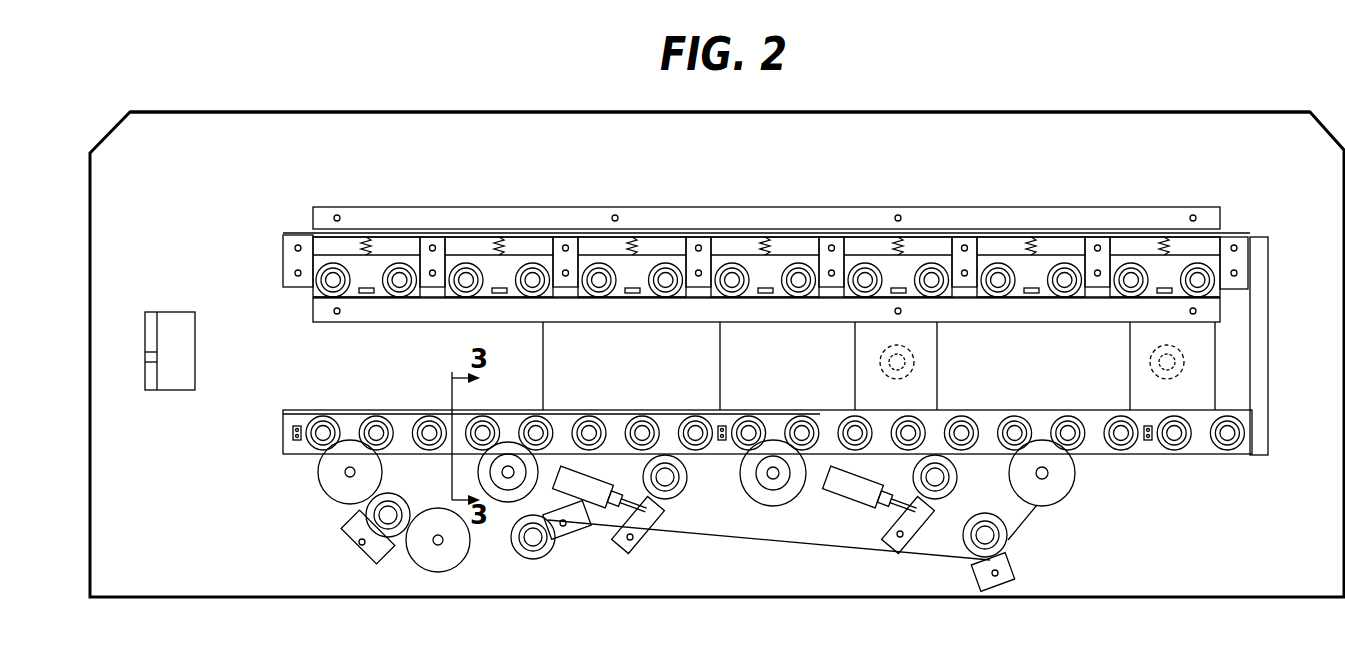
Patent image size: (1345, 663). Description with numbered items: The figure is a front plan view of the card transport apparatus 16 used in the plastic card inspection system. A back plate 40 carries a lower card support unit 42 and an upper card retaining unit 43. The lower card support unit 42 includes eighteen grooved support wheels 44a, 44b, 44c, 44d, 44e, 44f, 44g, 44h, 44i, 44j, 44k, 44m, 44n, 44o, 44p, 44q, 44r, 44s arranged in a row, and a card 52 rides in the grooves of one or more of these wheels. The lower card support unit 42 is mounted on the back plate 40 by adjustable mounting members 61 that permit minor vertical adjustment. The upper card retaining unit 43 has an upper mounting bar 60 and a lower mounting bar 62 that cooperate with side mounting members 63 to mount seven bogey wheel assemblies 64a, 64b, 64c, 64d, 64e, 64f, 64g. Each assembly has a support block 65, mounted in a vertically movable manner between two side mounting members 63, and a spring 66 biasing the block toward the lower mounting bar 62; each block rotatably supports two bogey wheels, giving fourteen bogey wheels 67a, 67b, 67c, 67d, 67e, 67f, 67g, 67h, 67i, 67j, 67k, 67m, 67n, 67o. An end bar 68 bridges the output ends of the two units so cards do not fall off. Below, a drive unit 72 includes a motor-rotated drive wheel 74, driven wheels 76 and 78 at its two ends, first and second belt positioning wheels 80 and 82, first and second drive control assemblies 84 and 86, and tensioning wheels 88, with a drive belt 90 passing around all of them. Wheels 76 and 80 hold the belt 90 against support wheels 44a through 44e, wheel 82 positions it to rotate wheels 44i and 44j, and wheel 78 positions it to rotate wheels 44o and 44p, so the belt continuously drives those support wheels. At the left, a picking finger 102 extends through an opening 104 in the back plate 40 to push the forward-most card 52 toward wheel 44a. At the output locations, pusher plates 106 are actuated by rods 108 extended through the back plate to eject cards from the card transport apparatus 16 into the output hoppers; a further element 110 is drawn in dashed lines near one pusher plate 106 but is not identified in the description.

The card transport apparatus 16 is at (980, 90).
The back plate 40 is at (432, 130).
The lower card support unit 42 is at (273, 434).
The upper card retaining unit 43 is at (744, 158).
The support wheel 44a is at (324, 415).
The support wheel 44b is at (377, 415).
The support wheel 44c is at (432, 415).
The support wheel 44d is at (484, 415).
The support wheel 44e is at (537, 415).
The support wheel 44f is at (592, 415).
The support wheel 44g is at (644, 415).
The support wheel 44h is at (700, 415).
The support wheel 44i is at (754, 415).
The support wheel 44j is at (804, 415).
The support wheel 44k is at (856, 415).
The support wheel 44m is at (908, 415).
The support wheel 44n is at (961, 415).
The support wheel 44o is at (1014, 415).
The support wheel 44p is at (1074, 453).
The support wheel 44q is at (1125, 415).
The support wheel 44r is at (1180, 453).
The support wheel 44s is at (1230, 453).
The card 52 is at (623, 369).
The upper mounting bar 60 is at (318, 213).
The adjustable mounting member 61 is at (285, 452).
The lower mounting bar 62 is at (318, 313).
The side mounting member 63 is at (290, 241).
The bogey wheel assembly 64a is at (348, 258).
The bogey wheel assembly 64b is at (524, 260).
The bogey wheel assembly 64c is at (650, 260).
The bogey wheel assembly 64d is at (735, 260).
The bogey wheel assembly 64e is at (915, 260).
The bogey wheel assembly 64f is at (1015, 260).
The bogey wheel assembly 64g is at (1180, 262).
The support block 65 is at (384, 262).
The spring 66 is at (366, 237).
The bogey wheel 67a is at (330, 300).
The bogey wheel 67b is at (395, 300).
The bogey wheel 67c is at (461, 300).
The bogey wheel 67d is at (527, 300).
The bogey wheel 67e is at (598, 300).
The bogey wheel 67f is at (663, 300).
The bogey wheel 67g is at (722, 300).
The bogey wheel 67h is at (798, 262).
The bogey wheel 67i is at (863, 262).
The bogey wheel 67j is at (945, 300).
The bogey wheel 67k is at (1005, 300).
The bogey wheel 67m is at (1065, 300).
The bogey wheel 67n is at (1130, 262).
The bogey wheel 67o is at (1197, 262).
The end bar 68 is at (1268, 372).
The drive unit 72 is at (326, 523).
The drive wheel 74 is at (416, 550).
The driven wheel 76 is at (320, 474).
The driven wheel 78 is at (1062, 484).
The first belt positioning wheel 80 is at (504, 502).
The second belt positioning wheel 82 is at (792, 498).
The first drive control assembly 84 is at (646, 485).
The second drive control assembly 86 is at (916, 485).
The tensioning wheel 88 is at (549, 556).
The drive belt 90 is at (713, 537).
The picking finger 102 is at (146, 362).
The opening 104 is at (168, 318).
The pusher plate 106 is at (928, 370).
The rod 108 is at (882, 355).
The nozzle 110 is at (880, 363).